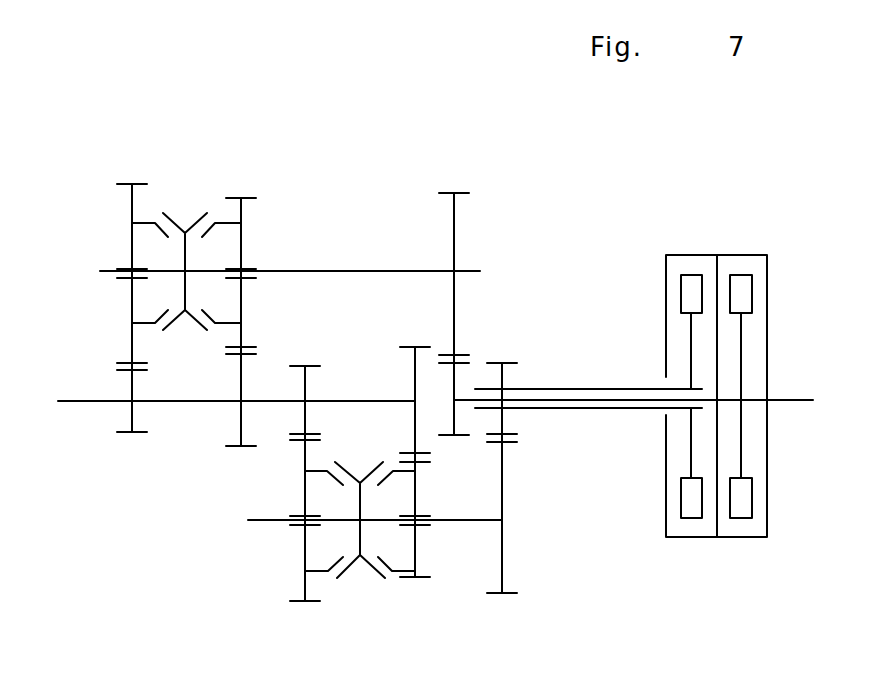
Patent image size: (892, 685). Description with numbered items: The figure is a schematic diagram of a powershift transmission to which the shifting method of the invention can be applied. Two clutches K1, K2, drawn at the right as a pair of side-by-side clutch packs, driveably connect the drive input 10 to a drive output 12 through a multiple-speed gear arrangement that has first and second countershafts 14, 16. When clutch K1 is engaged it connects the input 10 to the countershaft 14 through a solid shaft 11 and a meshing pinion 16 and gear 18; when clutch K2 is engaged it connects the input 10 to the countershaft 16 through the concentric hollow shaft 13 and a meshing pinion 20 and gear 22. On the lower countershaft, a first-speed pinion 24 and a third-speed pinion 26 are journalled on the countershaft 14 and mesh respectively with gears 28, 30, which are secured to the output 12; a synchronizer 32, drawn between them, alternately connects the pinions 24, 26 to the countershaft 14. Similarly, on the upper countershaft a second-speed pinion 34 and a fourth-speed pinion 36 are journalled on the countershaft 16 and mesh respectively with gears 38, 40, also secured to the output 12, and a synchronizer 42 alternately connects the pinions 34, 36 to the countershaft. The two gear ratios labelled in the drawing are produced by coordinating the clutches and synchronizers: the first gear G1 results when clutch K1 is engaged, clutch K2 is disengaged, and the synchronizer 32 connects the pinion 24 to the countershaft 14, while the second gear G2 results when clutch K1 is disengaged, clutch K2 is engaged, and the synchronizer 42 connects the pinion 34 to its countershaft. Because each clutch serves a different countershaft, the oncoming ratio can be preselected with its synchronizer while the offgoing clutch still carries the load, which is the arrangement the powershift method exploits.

The drive input 10 is at (813, 400).
The shaft 11 is at (590, 388).
The drive output 12 is at (90, 401).
The shaft 13 is at (597, 408).
The first countershaft 14 is at (477, 521).
The second countershaft 16 is at (350, 271).
The gear 18 is at (502, 482).
The pinion 20 is at (455, 382).
The gear 22 is at (454, 233).
The first-speed pinion 24 is at (417, 490).
The third-speed pinion 26 is at (305, 547).
The gear 28 is at (413, 418).
The gear 30 is at (305, 413).
The synchronizer 32 is at (360, 577).
The second-speed pinion 34 is at (241, 257).
The fourth-speed pinion 36 is at (132, 249).
The gear 38 is at (241, 379).
The gear 40 is at (132, 413).
The synchronizer 42 is at (188, 207).
The clutch K1 is at (690, 350).
The clutch K2 is at (741, 371).
The first gear G1 is at (417, 552).
The second gear G2 is at (241, 237).